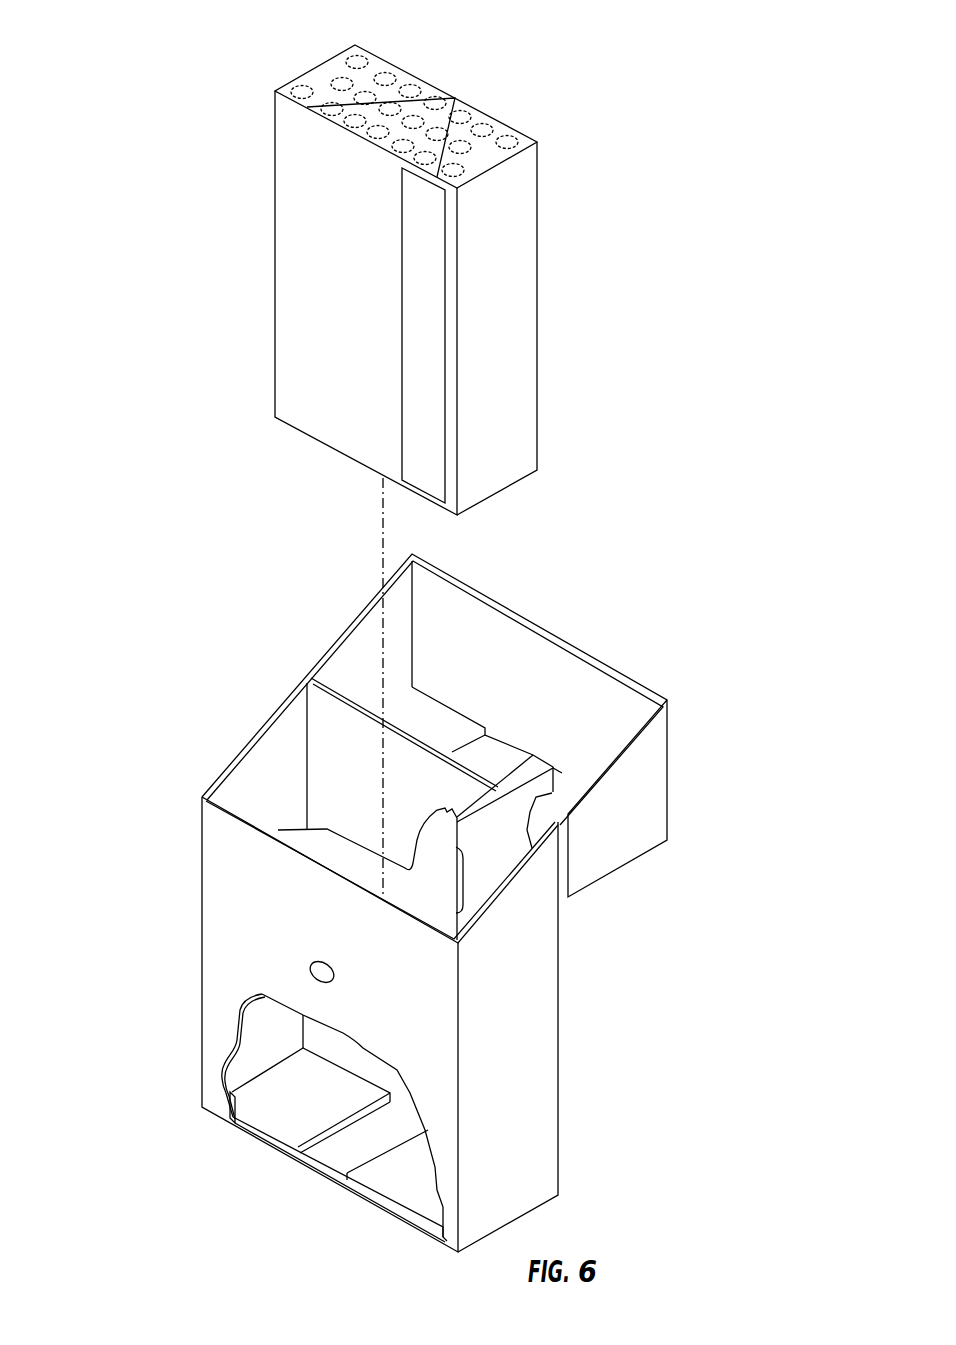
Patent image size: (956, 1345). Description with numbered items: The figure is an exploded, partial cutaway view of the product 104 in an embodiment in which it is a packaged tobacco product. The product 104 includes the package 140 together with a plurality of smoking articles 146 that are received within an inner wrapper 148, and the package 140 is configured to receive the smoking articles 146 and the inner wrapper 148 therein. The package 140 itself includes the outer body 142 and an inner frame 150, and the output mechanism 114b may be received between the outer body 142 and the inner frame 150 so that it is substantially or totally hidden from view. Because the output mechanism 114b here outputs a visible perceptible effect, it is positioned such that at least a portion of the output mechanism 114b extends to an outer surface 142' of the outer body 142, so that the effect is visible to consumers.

The product 104 is at (128, 115).
The smoking articles 146 is at (473, 145).
The inner wrapper 148 is at (311, 223).
The package 140 is at (218, 632).
The outer body 142 is at (387, 903).
The outer surface 142' is at (315, 950).
The output mechanism 114b is at (308, 963).
The inner frame 150 is at (492, 855).